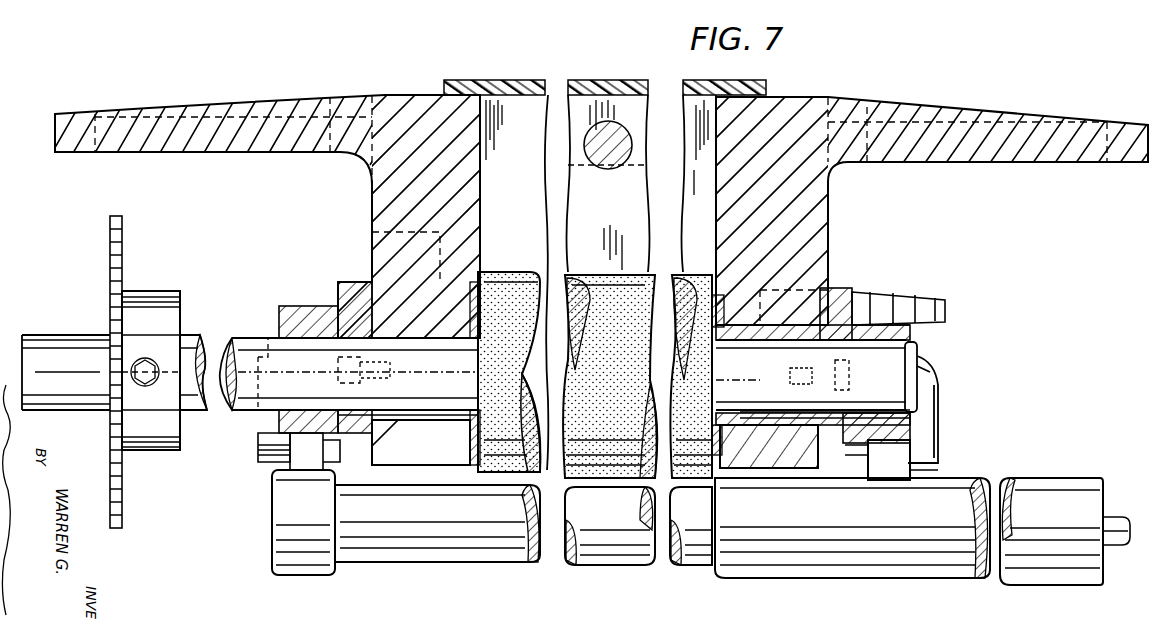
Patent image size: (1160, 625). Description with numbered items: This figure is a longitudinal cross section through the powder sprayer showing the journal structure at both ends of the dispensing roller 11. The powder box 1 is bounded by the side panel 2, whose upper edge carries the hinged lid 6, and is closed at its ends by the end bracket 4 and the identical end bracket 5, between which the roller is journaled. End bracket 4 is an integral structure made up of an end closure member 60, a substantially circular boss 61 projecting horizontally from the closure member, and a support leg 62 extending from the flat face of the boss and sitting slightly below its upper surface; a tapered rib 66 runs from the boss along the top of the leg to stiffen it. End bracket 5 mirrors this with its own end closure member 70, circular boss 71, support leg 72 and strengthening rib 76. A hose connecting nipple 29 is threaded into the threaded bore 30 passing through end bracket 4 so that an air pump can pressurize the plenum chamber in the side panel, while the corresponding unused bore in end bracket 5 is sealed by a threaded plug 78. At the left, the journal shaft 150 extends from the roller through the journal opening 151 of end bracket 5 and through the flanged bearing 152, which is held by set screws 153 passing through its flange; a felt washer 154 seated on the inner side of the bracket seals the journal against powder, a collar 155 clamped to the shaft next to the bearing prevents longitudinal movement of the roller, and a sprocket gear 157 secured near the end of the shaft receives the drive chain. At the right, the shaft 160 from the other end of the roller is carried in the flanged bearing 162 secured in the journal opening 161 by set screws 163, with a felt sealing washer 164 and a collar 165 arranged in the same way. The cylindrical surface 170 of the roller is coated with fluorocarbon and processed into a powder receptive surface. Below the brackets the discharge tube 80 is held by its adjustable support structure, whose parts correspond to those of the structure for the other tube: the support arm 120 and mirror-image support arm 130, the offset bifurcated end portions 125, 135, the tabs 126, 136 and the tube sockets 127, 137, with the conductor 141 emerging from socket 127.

The powder box 1 is at (600, 66).
The side panel 2 is at (610, 330).
The end bracket 4 is at (814, 194).
The end bracket 5 is at (364, 263).
The lid 6 is at (508, 86).
The dispensing roller 11 is at (513, 283).
The hose connecting nipple 29 is at (912, 292).
The threaded bore 30 is at (813, 379).
The end closure member 60 is at (716, 152).
The circular boss 61 is at (822, 262).
The support leg 62 is at (814, 207).
The tapered rib 66 is at (814, 207).
The end closure member 70 is at (364, 263).
The circular boss 71 is at (165, 158).
The support leg 72 is at (364, 271).
The strengthening rib 76 is at (364, 271).
The threaded plug 78 is at (352, 284).
The discharge tube 80 is at (466, 560).
The support arm 120 is at (947, 409).
The offset bifurcated end portion 125 is at (942, 436).
The tab 126 is at (900, 470).
The tube socket 127 is at (740, 578).
The support arm 130 is at (270, 330).
The offset bifurcated end portion 135 is at (258, 445).
The tab 136 is at (288, 466).
The tube socket 137 is at (268, 575).
The conductor 141 is at (1118, 540).
The journal shaft 150 is at (80, 342).
The journal opening 151 is at (472, 338).
The flanged bearing 152 is at (340, 292).
The set screws 153 is at (388, 362).
The felt washer 154 is at (480, 316).
The collar 155 is at (290, 306).
The sprocket gear 157 is at (108, 253).
The shaft 160 is at (920, 368).
The journal opening 161 is at (760, 425).
The flanged bearing 162 is at (812, 428).
The set screws 163 is at (790, 380).
The felt sealing washer 164 is at (722, 340).
The collar 165 is at (905, 330).
The cylindrical surface 170 is at (683, 278).